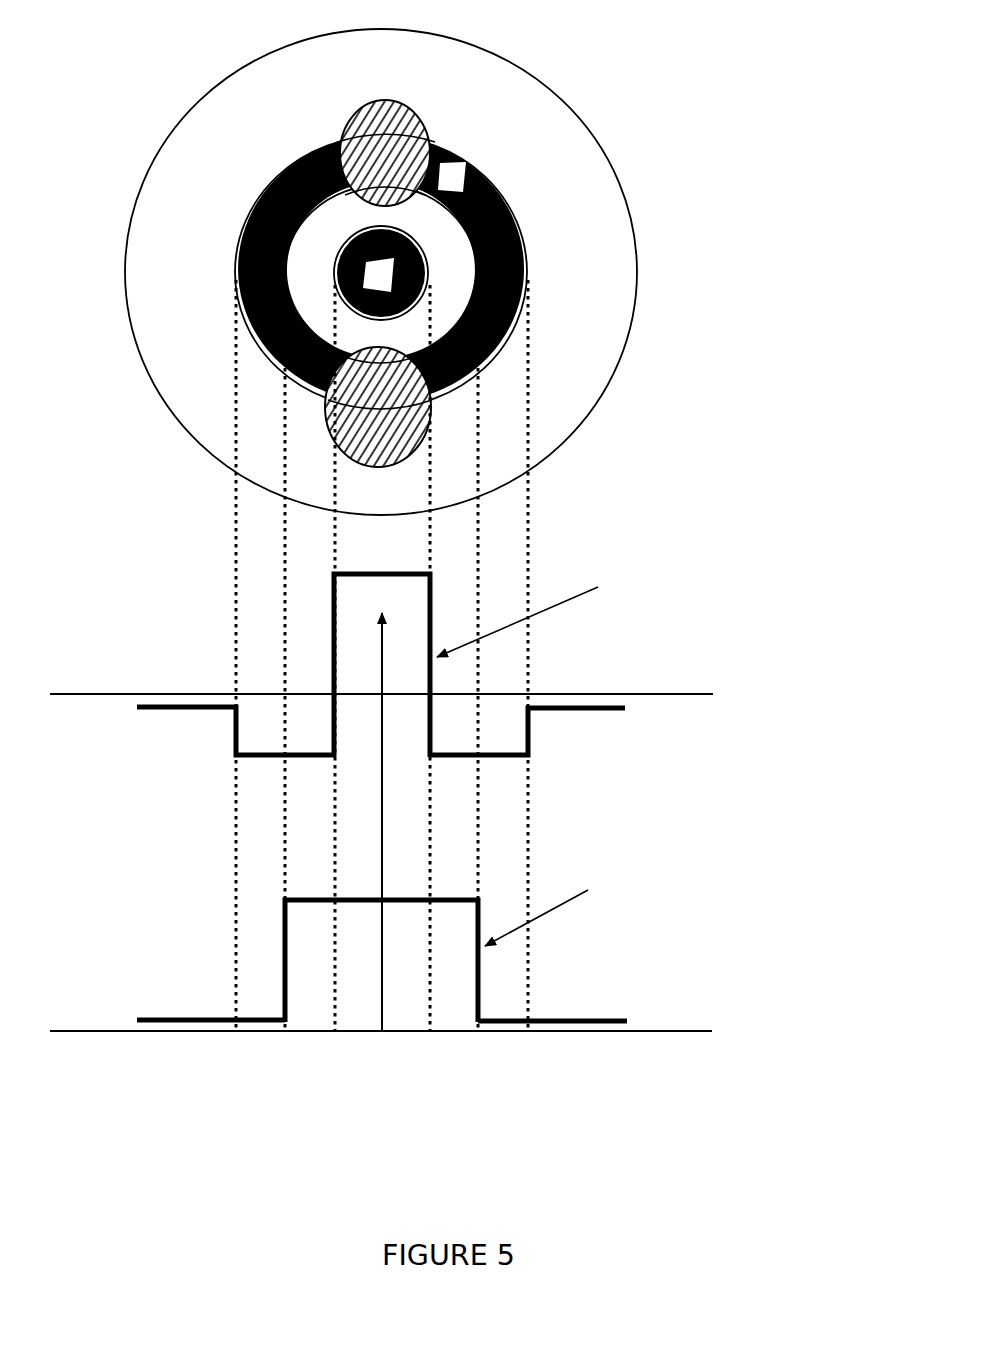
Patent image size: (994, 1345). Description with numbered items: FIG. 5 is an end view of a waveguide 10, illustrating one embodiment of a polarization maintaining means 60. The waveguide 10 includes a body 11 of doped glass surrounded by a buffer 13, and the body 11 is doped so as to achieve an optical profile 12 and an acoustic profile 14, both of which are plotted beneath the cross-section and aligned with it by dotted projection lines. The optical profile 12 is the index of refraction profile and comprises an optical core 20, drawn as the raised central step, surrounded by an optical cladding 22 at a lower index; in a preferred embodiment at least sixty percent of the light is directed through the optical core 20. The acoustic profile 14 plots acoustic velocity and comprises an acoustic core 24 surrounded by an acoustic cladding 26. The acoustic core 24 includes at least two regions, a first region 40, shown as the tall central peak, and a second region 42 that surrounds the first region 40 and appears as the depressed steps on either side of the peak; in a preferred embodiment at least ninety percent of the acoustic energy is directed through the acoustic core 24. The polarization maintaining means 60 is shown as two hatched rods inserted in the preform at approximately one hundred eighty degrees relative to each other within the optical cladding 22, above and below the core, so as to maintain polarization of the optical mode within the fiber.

The waveguide 10 is at (724, 145).
The body 11 is at (477, 78).
The optical profile 12 is at (481, 935).
The buffer 13 is at (619, 97).
The acoustic profile 14 is at (461, 663).
The optical core 20 is at (277, 952).
The optical cladding 22 is at (163, 1005).
The acoustic core 24 is at (271, 658).
The acoustic cladding 26 is at (161, 691).
The first region 40 is at (326, 593).
The second region 42 is at (276, 744).
The polarization maintaining means 60 is at (348, 155).